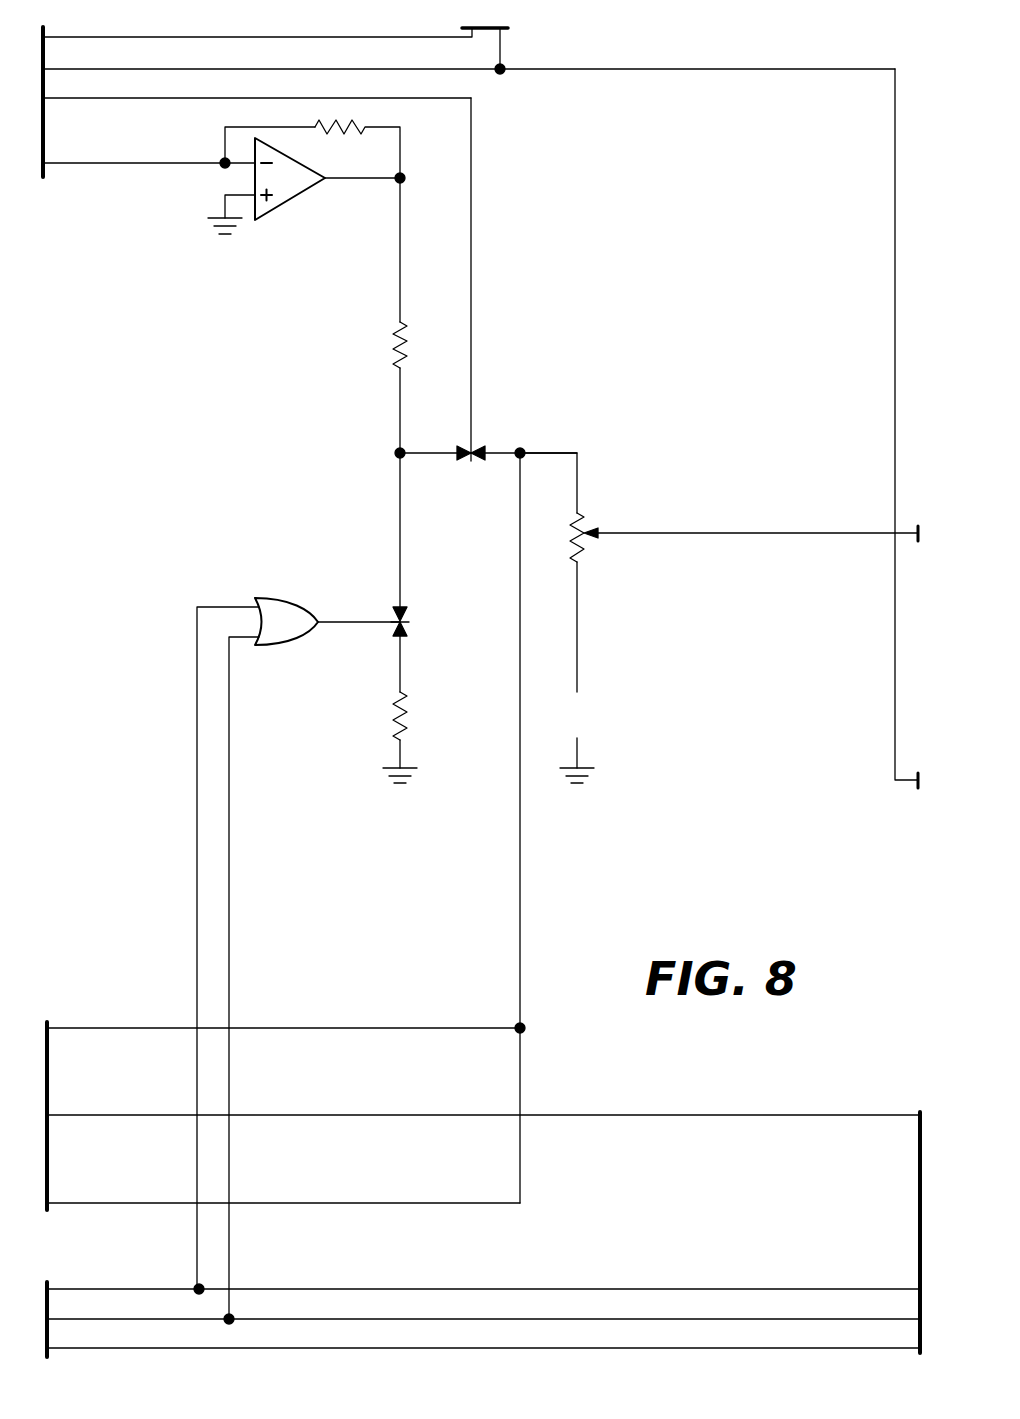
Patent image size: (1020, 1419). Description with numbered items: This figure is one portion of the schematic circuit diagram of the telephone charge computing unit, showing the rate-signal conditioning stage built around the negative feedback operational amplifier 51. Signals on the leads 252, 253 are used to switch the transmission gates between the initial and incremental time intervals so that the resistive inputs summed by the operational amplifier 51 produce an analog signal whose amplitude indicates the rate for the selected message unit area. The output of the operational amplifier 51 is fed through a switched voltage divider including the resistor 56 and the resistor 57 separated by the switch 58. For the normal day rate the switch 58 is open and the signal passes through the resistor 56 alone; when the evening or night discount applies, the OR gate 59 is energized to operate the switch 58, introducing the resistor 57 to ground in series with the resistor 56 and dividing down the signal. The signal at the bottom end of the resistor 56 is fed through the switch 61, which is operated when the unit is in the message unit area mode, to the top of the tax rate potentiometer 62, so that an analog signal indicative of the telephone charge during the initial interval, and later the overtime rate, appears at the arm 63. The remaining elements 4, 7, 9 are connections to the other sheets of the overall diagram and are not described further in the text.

The contact 4 is at (485, 16).
The bus conductors 7 is at (35, 692).
The bus conductor 9 is at (928, 939).
The negative feedback operational amplifier 51 is at (290, 196).
The resistor 56 is at (393, 348).
The resistor 57 is at (405, 694).
The switch 58 is at (406, 620).
The OR gate 59 is at (311, 583).
The switch 61 is at (472, 459).
The tax rate potentiometer 62 is at (577, 453).
The arm 63 is at (570, 542).
The lead 252 is at (346, 40).
The lead 253 is at (503, 41).